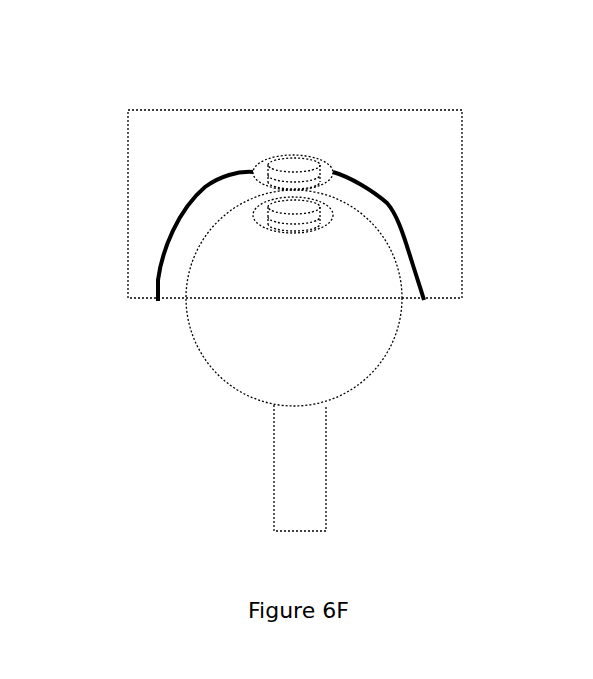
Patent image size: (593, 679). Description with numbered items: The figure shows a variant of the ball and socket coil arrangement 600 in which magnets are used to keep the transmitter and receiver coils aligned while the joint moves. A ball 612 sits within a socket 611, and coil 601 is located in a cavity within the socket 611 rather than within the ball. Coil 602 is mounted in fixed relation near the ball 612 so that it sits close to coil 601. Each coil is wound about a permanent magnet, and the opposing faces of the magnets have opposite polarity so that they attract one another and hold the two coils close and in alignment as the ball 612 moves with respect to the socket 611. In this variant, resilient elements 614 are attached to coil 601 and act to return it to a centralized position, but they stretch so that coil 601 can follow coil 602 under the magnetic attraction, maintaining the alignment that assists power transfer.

The mounting assembly 600 is at (142, 63).
The coil 601 is at (335, 170).
The coil 602 is at (315, 226).
The socket 611 is at (462, 225).
The ball 612 is at (365, 383).
The resilient elements 614 is at (413, 275).